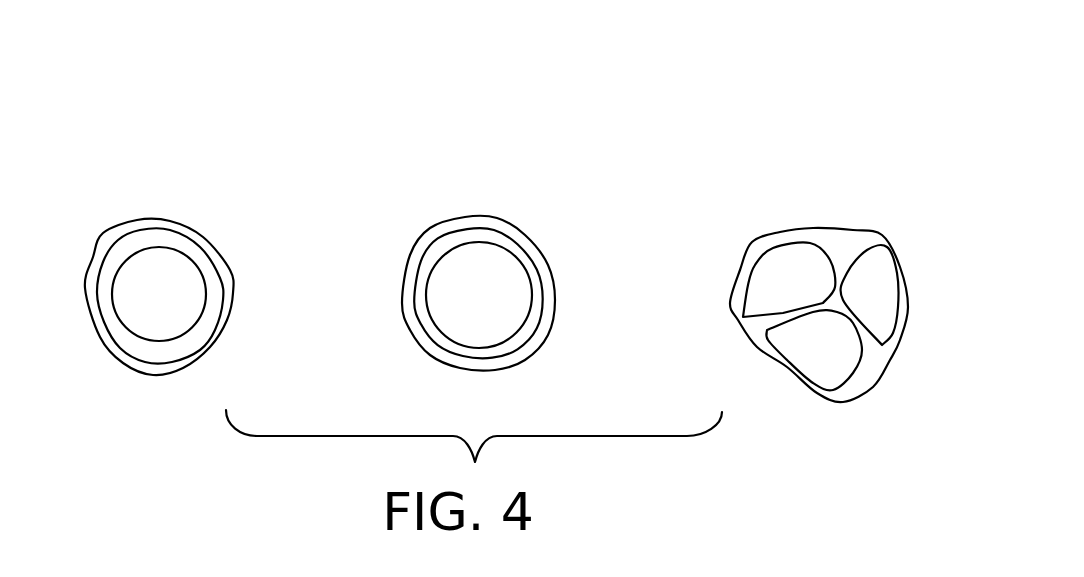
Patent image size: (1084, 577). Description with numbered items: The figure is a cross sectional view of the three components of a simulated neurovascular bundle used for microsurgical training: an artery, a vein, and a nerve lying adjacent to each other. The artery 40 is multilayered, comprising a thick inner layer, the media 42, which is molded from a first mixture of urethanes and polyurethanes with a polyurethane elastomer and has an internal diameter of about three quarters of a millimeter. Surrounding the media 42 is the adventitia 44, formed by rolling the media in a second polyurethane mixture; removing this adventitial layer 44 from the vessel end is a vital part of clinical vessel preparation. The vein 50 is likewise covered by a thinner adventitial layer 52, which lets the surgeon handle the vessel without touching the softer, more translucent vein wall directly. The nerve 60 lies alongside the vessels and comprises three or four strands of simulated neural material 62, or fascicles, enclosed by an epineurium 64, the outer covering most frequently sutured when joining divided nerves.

The artery 40 is at (183, 299).
The media 42 is at (210, 275).
The adventitia 44 is at (138, 221).
The vein 50 is at (480, 283).
The adventitial layer 52 is at (495, 222).
The nerve 60 is at (837, 320).
The strands of simulated neural material 62 is at (790, 260).
The epineurium 64 is at (908, 322).